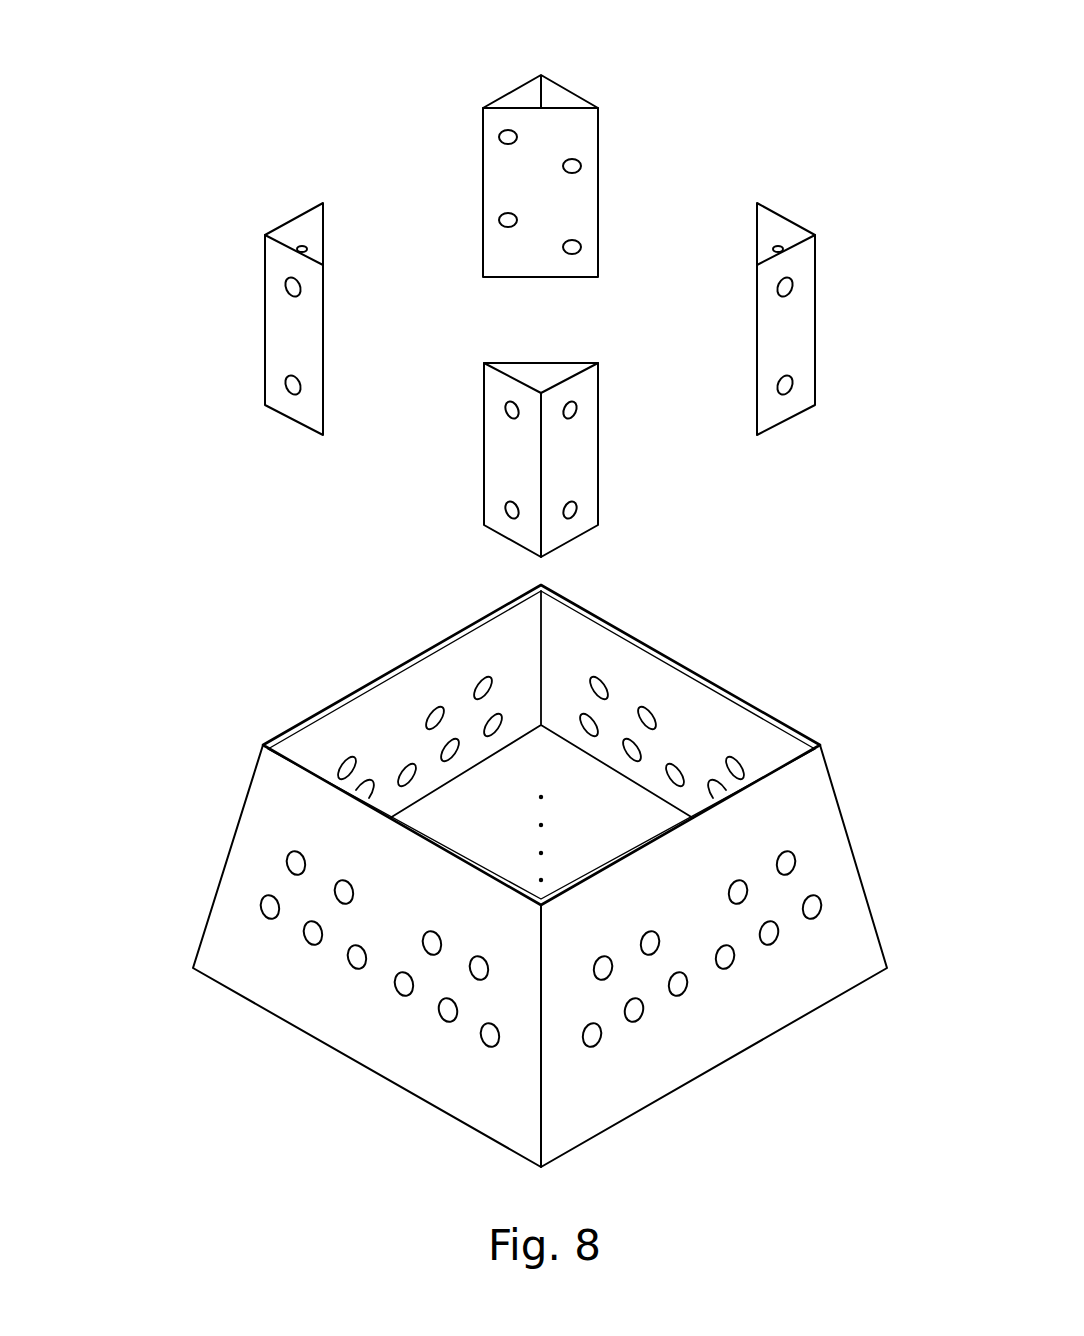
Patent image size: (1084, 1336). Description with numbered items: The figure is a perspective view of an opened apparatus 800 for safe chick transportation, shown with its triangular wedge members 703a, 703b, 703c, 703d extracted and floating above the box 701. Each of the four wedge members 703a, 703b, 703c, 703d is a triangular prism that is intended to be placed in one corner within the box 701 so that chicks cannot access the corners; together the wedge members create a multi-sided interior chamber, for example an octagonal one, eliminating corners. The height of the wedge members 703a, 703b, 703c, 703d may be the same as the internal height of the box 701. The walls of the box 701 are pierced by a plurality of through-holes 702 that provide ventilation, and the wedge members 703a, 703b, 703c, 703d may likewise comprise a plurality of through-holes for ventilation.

The opened apparatus 800 is at (277, 100).
The box 701 is at (727, 692).
The through-holes 702 is at (305, 935).
The wedge member 703a is at (553, 136).
The wedge member 703b is at (265, 295).
The wedge member 703c is at (803, 328).
The wedge member 703d is at (573, 453).